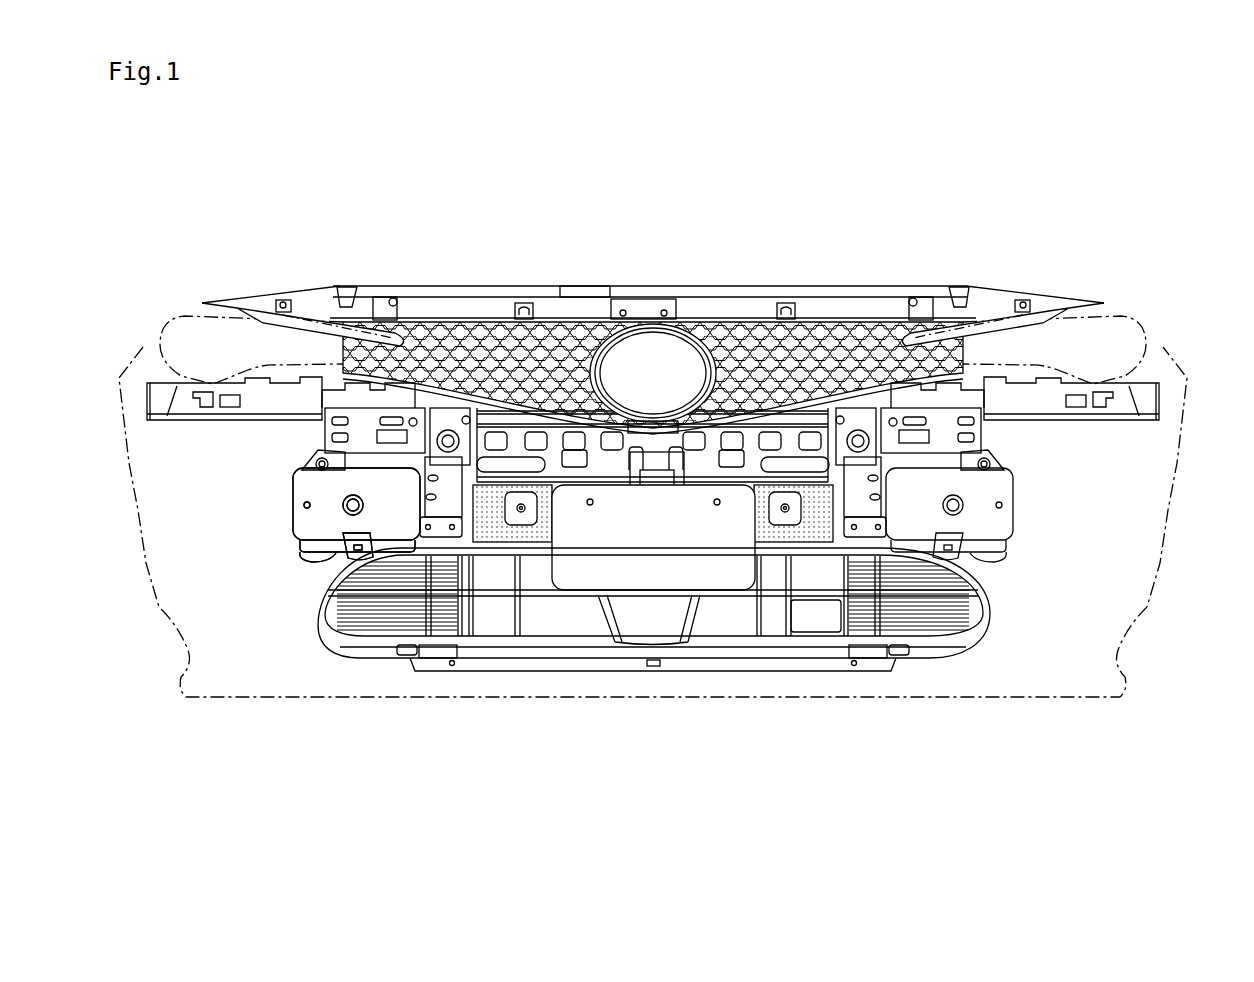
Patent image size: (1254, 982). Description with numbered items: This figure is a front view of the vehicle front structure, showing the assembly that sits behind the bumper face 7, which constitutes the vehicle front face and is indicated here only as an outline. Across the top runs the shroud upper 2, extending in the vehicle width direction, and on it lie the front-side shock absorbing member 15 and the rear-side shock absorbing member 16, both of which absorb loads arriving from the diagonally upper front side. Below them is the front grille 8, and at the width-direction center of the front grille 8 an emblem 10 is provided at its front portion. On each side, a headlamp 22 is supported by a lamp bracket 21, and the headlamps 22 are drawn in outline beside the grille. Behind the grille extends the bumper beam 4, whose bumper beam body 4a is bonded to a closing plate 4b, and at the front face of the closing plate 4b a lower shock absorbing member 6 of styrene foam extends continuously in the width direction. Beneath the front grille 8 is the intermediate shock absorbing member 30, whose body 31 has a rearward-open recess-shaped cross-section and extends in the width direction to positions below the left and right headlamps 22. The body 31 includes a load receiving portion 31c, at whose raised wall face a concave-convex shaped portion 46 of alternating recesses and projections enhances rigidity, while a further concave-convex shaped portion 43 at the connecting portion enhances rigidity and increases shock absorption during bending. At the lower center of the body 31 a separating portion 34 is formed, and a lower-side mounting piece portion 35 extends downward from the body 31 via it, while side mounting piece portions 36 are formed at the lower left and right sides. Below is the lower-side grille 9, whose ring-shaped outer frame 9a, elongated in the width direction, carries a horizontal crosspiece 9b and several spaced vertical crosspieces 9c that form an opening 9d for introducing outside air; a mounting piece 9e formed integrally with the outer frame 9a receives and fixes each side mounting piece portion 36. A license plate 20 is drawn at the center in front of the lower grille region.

The shroud upper 2 is at (1073, 300).
The bumper beam 4 is at (975, 515).
The bumper beam body 4a is at (1004, 550).
The closing plate 4b is at (1005, 518).
The lower shock absorbing member 6 is at (791, 546).
The bumper face 7 is at (1174, 466).
The front grille 8 is at (803, 318).
The lower-side grille 9 is at (655, 643).
The outer frame 9a is at (322, 606).
The horizontal crosspiece 9b is at (763, 598).
The vertical crosspieces 9c is at (799, 618).
The opening 9d is at (500, 618).
The mounting piece 9e is at (420, 528).
The emblem 10 is at (640, 376).
The front-side shock absorbing member 15 is at (710, 293).
The rear-side shock absorbing member 16 is at (583, 287).
The license plate 20 is at (633, 580).
The lamp bracket 21 is at (207, 412).
The headlamp 22 is at (172, 312).
The intermediate shock absorbing member 30 is at (986, 437).
The body 31 is at (696, 476).
The load receiving portion 31c is at (715, 452).
The separating portion 34 is at (647, 500).
The lower-side mounting piece portion 35 is at (643, 482).
The side mounting piece portions 36 is at (416, 490).
The concave-convex shaped portion 43 is at (733, 467).
The concave-convex shaped portion 46 is at (571, 443).